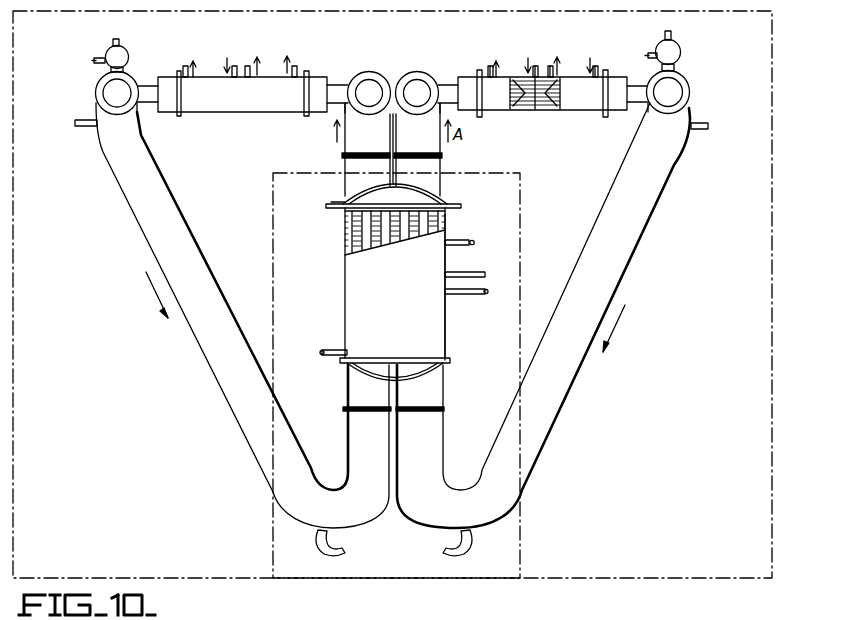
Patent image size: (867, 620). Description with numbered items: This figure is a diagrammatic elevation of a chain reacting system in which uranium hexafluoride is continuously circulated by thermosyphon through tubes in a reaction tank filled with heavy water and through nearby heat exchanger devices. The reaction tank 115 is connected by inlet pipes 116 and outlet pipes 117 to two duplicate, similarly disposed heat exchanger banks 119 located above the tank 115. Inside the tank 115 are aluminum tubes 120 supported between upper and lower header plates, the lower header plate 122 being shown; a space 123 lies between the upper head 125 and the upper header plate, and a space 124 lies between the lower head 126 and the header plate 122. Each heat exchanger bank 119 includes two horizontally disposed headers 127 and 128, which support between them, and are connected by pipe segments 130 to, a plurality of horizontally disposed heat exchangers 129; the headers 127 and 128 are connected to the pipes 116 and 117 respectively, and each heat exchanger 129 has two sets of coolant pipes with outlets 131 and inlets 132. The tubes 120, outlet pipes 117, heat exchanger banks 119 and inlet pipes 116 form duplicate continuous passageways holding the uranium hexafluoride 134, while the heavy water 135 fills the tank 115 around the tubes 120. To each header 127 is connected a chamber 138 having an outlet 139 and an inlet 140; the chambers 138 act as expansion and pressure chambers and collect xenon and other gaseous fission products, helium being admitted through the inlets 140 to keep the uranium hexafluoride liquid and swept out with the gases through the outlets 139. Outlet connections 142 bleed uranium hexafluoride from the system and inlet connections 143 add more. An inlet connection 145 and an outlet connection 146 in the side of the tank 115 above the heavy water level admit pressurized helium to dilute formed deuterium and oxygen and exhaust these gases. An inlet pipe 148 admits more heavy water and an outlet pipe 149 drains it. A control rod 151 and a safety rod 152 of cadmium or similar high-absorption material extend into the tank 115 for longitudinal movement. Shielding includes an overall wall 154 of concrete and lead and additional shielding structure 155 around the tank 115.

The reaction tank 115 is at (395, 283).
The inlet pipes 116 is at (233, 402).
The outlet pipes 117 is at (355, 164).
The heat exchanger bank 119 is at (243, 55).
The tubes 120 is at (373, 229).
The lower header plate 122 is at (449, 361).
The space 123 is at (370, 197).
The space 124 is at (372, 366).
The upper head 125 is at (408, 188).
The lower head 126 is at (416, 374).
The header 127 is at (123, 87).
The header 128 is at (410, 76).
The heat exchanger 129 is at (244, 100).
The pipe segments 130 is at (142, 104).
The coolant outlet 131 is at (490, 65).
The coolant inlet 132 is at (596, 62).
The UF6 134 is at (452, 222).
The D2O 135 is at (363, 243).
The chamber 138 is at (106, 49).
The outlet 139 is at (121, 41).
The inlet 140 is at (100, 63).
The outlet connection 142 is at (455, 539).
The inlet connection 143 is at (86, 130).
The inlet connection 145 is at (332, 203).
The outlet connection 146 is at (455, 205).
The inlet pipe 148 is at (471, 245).
The outlet pipe 149 is at (335, 350).
The control rod 151 is at (478, 274).
The safety rod 152 is at (479, 295).
The overall wall 154 is at (15, 491).
The shielding structure 155 is at (520, 268).